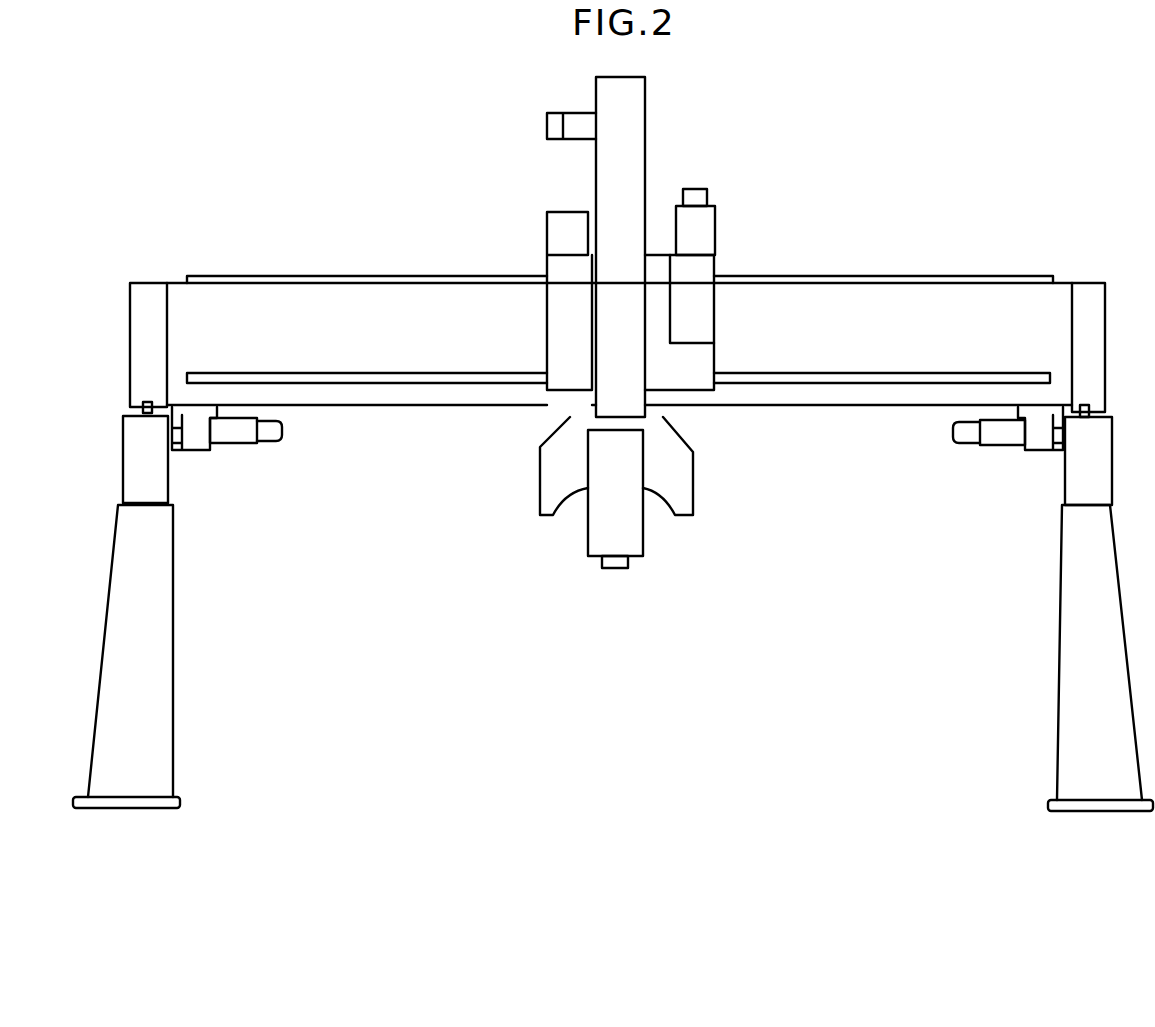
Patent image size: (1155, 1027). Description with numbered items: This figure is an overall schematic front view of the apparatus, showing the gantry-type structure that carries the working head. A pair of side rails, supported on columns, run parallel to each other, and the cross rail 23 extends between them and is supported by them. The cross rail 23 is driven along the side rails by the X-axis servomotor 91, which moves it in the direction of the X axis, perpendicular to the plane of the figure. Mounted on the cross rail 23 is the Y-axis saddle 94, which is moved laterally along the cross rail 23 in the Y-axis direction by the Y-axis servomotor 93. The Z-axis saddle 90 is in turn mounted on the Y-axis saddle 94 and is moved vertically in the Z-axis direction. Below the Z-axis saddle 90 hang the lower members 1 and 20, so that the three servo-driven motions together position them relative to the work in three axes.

The workpiece holder 1 is at (590, 545).
The nozzle 20 is at (628, 568).
The cross rail 23 is at (228, 290).
The Z-axis saddle 90 is at (646, 90).
The X-axis servomotor 91 is at (284, 436).
The Y-axis servomotor 93 is at (703, 218).
The Y-axis saddle 94 is at (694, 383).